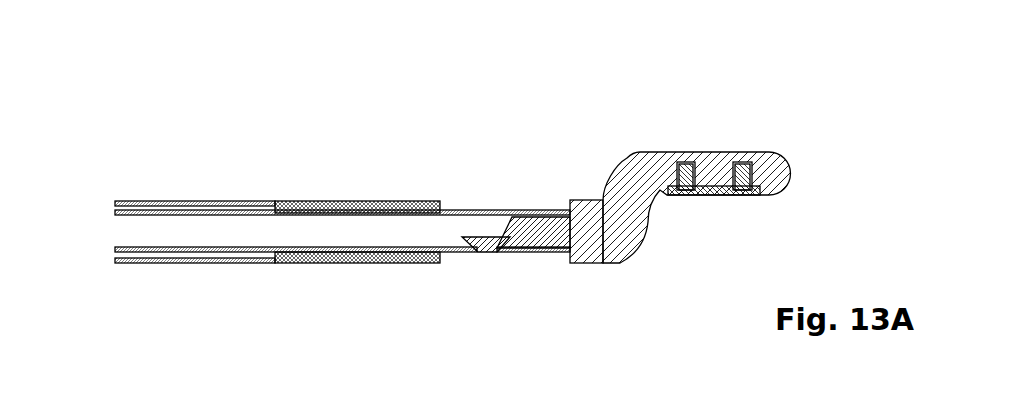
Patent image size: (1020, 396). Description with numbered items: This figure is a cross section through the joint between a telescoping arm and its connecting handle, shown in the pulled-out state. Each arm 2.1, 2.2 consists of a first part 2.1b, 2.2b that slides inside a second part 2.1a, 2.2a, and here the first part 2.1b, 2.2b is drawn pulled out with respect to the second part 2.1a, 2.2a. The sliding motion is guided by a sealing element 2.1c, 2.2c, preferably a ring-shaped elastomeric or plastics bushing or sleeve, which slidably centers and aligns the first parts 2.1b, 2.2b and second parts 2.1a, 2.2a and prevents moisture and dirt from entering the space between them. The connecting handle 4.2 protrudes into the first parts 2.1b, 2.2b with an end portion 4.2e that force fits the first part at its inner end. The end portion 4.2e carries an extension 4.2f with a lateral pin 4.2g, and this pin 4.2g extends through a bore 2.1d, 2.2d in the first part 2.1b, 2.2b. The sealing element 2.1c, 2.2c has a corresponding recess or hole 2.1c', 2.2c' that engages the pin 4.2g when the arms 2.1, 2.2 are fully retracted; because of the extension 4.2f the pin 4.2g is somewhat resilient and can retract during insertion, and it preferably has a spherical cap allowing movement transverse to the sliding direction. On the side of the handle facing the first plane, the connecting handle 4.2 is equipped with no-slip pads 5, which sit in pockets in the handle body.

The arm 2.1 is at (306, 203).
The arm 2.2 is at (223, 145).
The second part 2.1a is at (159, 168).
The second part 2.2a is at (182, 202).
The first part 2.1b is at (342, 176).
The first part 2.2b is at (505, 212).
The sealing element 2.1c is at (342, 297).
The sealing element 2.2c is at (342, 297).
The recess or hole 2.1c' is at (277, 312).
The recess or hole 2.2c' is at (277, 312).
The bore 2.1d is at (360, 192).
The bore 2.2d is at (477, 250).
The connecting handle 4.2 is at (728, 107).
The end portion 4.2e is at (553, 227).
The extension 4.2f is at (492, 240).
The pin 4.2g is at (490, 257).
The no-slip pad 5 is at (710, 193).